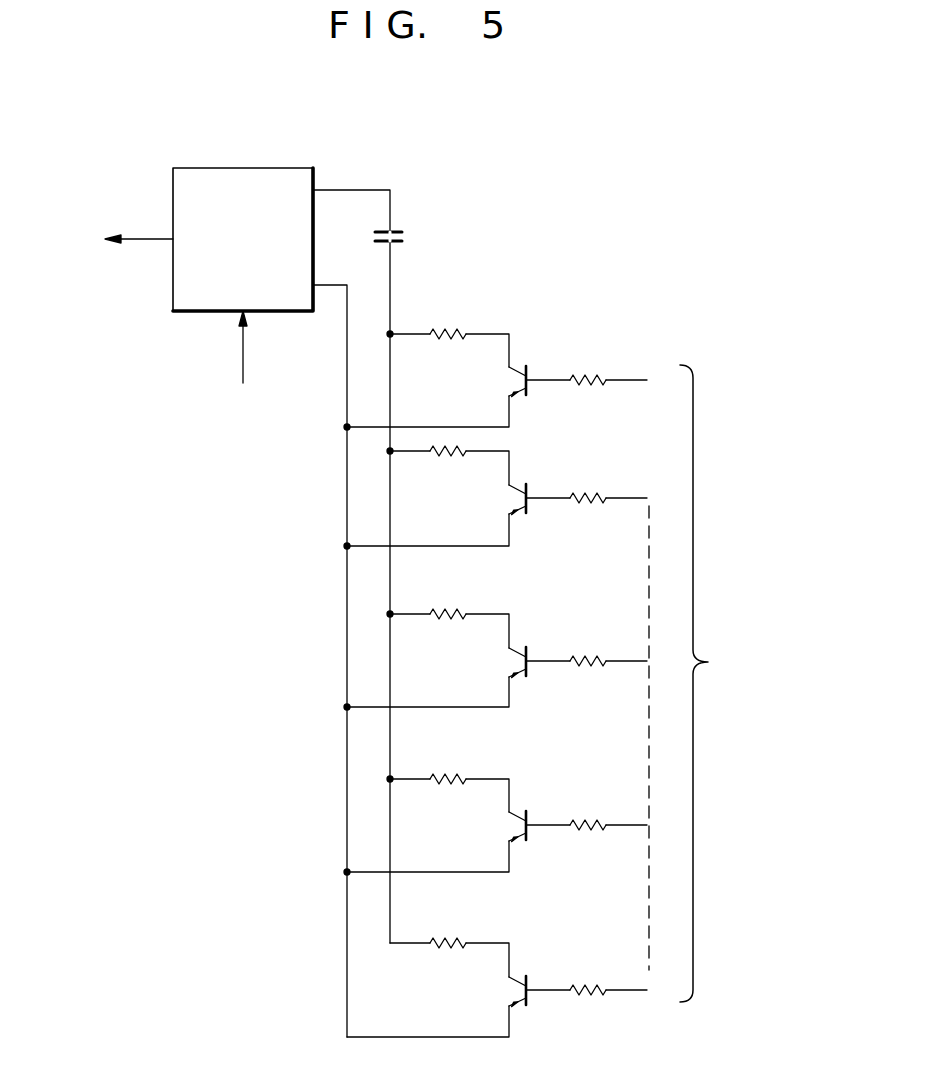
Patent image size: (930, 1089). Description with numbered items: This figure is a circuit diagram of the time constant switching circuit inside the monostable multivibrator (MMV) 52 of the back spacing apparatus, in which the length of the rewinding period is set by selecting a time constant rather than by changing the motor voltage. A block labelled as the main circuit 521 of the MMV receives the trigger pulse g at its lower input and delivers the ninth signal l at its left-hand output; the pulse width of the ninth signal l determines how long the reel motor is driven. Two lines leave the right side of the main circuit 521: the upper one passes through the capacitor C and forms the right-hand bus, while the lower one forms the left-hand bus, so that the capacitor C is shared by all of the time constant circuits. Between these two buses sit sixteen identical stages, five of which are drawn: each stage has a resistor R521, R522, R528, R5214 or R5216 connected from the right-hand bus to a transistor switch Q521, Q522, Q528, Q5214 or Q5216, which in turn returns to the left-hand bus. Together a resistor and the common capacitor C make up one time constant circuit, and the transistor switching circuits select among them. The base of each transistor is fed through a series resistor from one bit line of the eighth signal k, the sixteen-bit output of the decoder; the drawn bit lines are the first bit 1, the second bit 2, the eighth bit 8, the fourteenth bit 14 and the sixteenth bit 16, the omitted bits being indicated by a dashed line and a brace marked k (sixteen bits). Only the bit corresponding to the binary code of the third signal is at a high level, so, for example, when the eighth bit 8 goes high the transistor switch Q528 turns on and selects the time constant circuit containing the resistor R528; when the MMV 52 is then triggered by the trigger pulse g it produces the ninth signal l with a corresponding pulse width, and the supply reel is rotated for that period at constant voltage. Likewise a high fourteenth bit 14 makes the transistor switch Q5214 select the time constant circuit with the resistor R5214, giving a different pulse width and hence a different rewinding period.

The monostable multivibrator (MMV) 52 is at (238, 764).
The main circuit of MMV 521 is at (282, 175).
The capacitor C is at (406, 238).
The ninth signal l is at (136, 223).
The trigger pulse g is at (253, 350).
The eighth signal k is at (753, 683).
The resistor of time constant circuit CR52_1 R521 is at (447, 340).
The resistor of time constant circuit CR52_2 R522 is at (447, 457).
The resistor of time constant circuit CR52_8 R528 is at (447, 620).
The resistor of time constant circuit CR52_14 R5214 is at (447, 785).
The resistor of time constant circuit CR52_16 R5216 is at (447, 949).
The transistor switching circuit Q521 is at (519, 365).
The transistor switching circuit Q522 is at (519, 484).
The transistor switching circuit Q528 is at (519, 647).
The transistor switching circuit Q5214 is at (519, 812).
The transistor switching circuit Q5216 is at (519, 977).
The first bit of eighth signal 1 is at (597, 380).
The second bit of eighth signal 2 is at (597, 498).
The eighth bit of eighth signal 8 is at (597, 661).
The fourteenth bit of eighth signal 14 is at (604, 825).
The sixteenth bit of eighth signal 16 is at (604, 990).